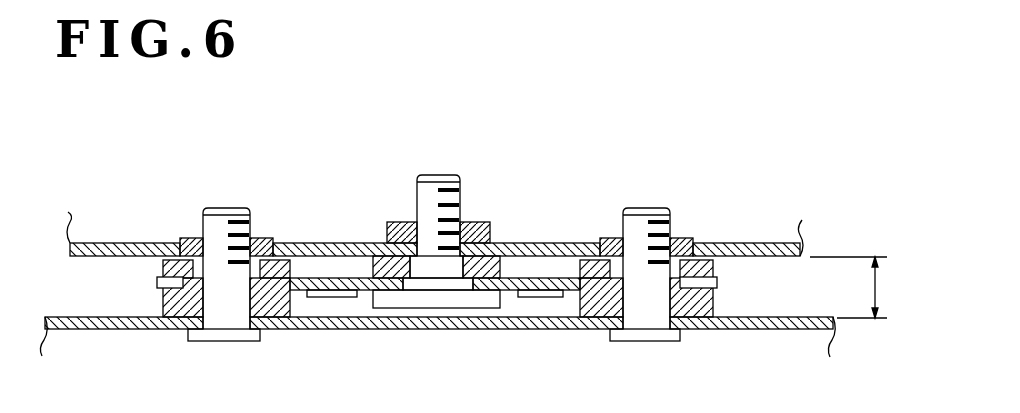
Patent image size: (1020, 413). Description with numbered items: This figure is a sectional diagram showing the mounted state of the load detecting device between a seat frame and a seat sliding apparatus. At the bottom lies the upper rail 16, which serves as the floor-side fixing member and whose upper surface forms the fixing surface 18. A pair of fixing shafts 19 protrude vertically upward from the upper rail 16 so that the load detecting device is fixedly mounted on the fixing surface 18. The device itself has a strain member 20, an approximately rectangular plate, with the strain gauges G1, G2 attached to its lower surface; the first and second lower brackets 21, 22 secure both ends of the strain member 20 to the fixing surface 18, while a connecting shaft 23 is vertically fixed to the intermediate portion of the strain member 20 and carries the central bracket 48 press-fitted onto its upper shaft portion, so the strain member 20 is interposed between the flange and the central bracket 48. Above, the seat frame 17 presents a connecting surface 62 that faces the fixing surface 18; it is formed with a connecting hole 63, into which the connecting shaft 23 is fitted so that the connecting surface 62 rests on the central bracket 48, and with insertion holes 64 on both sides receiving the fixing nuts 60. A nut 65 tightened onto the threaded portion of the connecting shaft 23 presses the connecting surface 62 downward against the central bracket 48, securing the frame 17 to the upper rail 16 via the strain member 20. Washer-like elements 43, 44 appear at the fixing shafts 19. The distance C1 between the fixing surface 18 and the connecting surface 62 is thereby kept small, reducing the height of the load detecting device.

The upper rail 16 is at (98, 329).
The seat frame 17 is at (768, 248).
The fixing surface 18 is at (762, 316).
The fixing shaft 19 is at (224, 222).
The strain member 20 is at (523, 285).
The first lower bracket 21 is at (268, 303).
The second lower bracket 22 is at (693, 303).
The connecting shaft 23 is at (434, 306).
The washer 43 is at (168, 268).
The washer 44 is at (707, 270).
The central bracket 48 is at (385, 270).
The fixing nut 60 is at (193, 240).
The connecting surface 62 is at (100, 257).
The connecting hole 63 is at (428, 243).
The insertion hole 64 is at (263, 240).
The nut 65 is at (470, 238).
The strain gauge G1 is at (330, 293).
The strain gauge G2 is at (538, 293).
The distance C1 is at (856, 287).